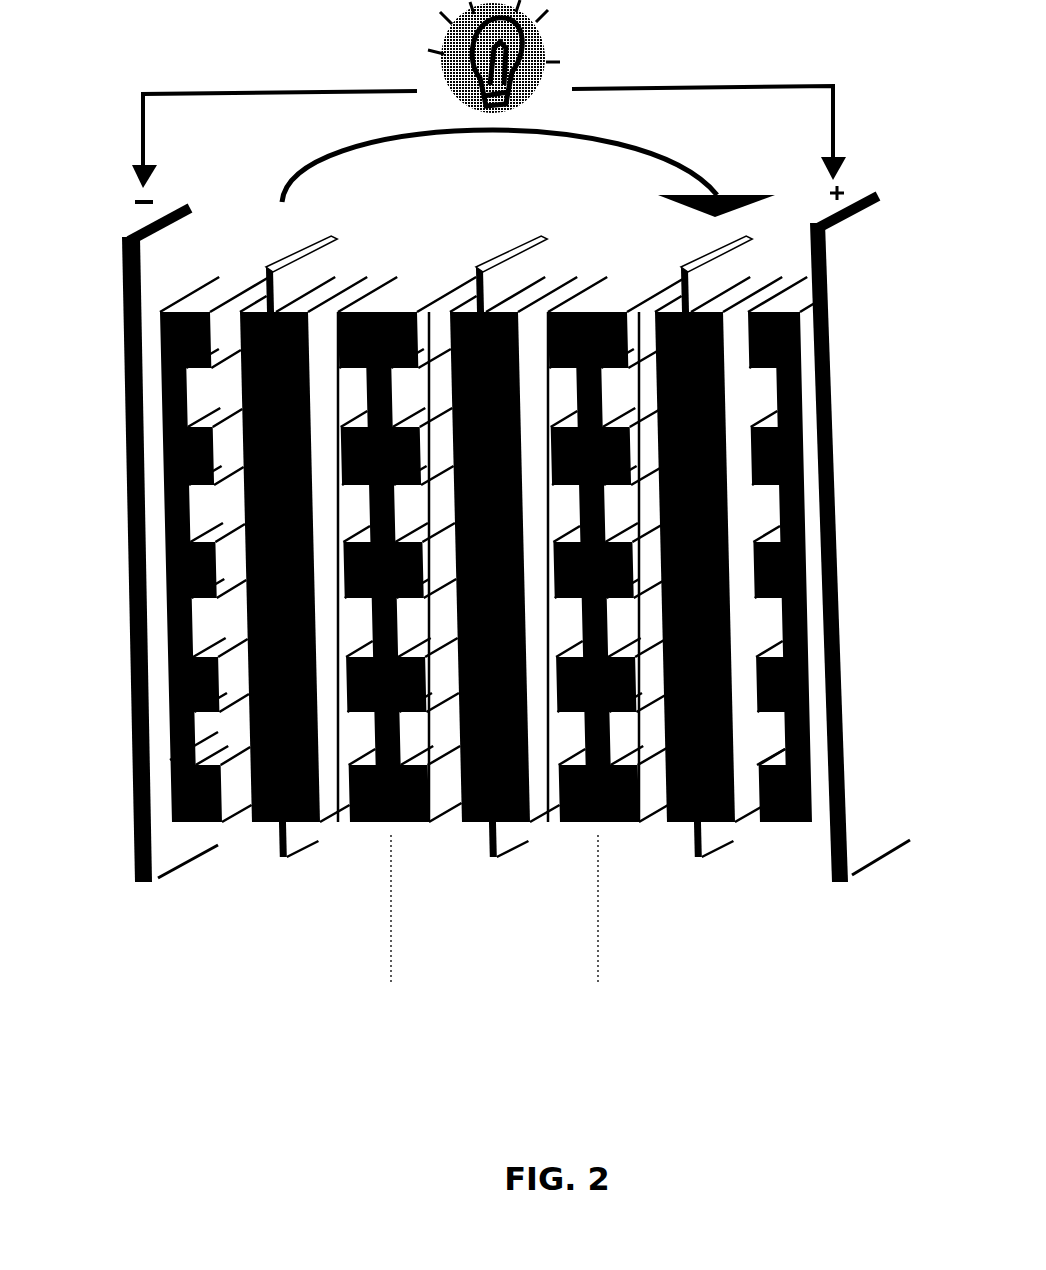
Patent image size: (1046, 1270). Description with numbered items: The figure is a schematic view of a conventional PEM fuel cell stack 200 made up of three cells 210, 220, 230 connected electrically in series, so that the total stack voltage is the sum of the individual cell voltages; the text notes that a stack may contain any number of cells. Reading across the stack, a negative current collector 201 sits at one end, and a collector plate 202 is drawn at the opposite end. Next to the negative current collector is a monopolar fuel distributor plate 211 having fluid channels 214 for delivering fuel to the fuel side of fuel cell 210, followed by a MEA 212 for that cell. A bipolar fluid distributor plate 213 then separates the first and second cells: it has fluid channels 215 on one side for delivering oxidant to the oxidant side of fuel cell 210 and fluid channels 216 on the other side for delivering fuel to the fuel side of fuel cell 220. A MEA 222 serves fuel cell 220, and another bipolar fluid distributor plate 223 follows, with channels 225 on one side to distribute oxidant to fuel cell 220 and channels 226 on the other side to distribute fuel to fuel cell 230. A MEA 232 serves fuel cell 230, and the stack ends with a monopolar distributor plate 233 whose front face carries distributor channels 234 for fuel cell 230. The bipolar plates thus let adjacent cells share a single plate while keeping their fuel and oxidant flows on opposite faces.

The fuel cell stack 200 is at (115, 1030).
The negative current collector 201 is at (110, 304).
The positive terminal current collector plate 202 is at (846, 303).
The fuel cell 210 is at (197, 945).
The monopolar fuel distributor plate 211 is at (193, 292).
The MEA 212 is at (246, 863).
The bipolar fluid distributor plate 213 is at (400, 292).
The fluid channels 214 is at (200, 738).
The fluid channels 215 is at (352, 746).
The fluid channels 216 is at (430, 746).
The fuel cell 220 is at (408, 945).
The MEA 222 is at (458, 863).
The bipolar fluid distributor plate 223 is at (603, 292).
The channels 225 is at (560, 746).
The channels 226 is at (638, 746).
The fuel cell 230 is at (617, 945).
The MEA 232 is at (665, 863).
The monopolar oxidant distributor plate 233 is at (775, 292).
The fuel distributor channels 234 is at (782, 741).